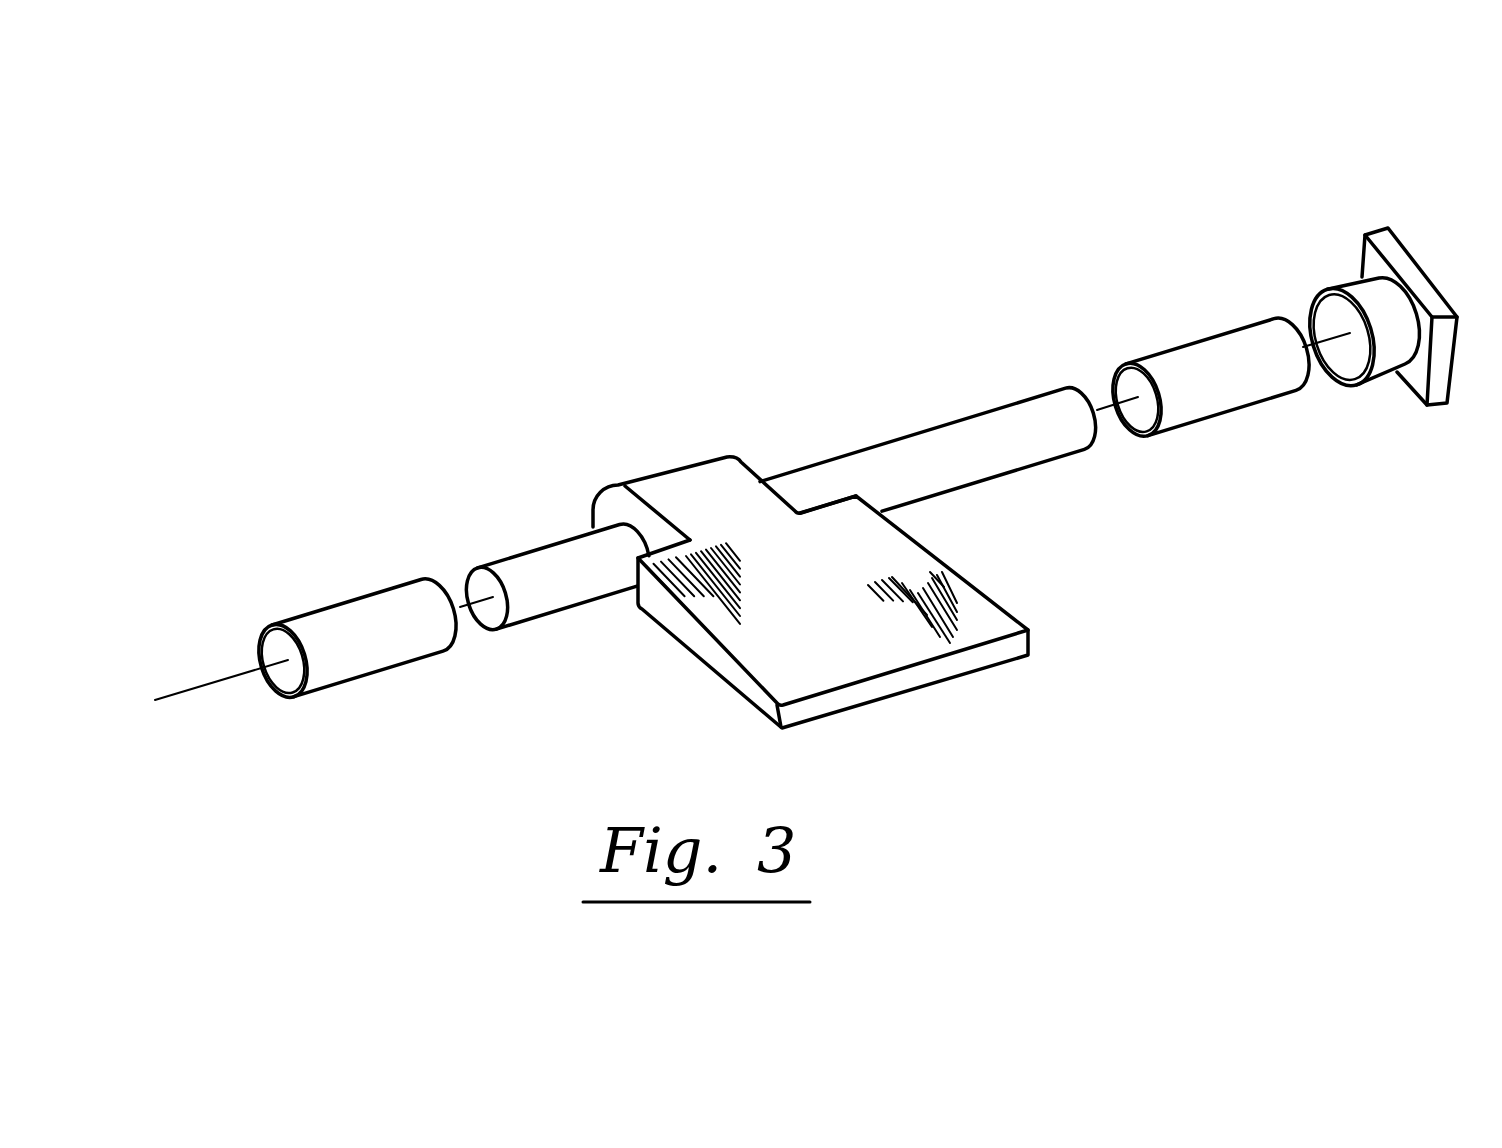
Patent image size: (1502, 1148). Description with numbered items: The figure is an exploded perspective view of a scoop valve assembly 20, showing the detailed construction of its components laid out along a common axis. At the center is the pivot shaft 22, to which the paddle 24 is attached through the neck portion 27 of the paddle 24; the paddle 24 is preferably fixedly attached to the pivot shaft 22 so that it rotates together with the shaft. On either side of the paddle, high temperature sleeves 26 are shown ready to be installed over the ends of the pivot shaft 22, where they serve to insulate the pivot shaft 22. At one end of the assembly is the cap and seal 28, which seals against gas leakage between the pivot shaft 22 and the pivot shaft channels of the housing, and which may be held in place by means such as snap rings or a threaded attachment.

The scoop valve assembly 20 is at (1059, 228).
The pivot shaft 22 is at (892, 423).
The paddle 24 is at (829, 623).
The high temperature sleeves 26 is at (348, 608).
The neck portion 27 is at (660, 484).
The cap and seal 28 is at (1398, 251).